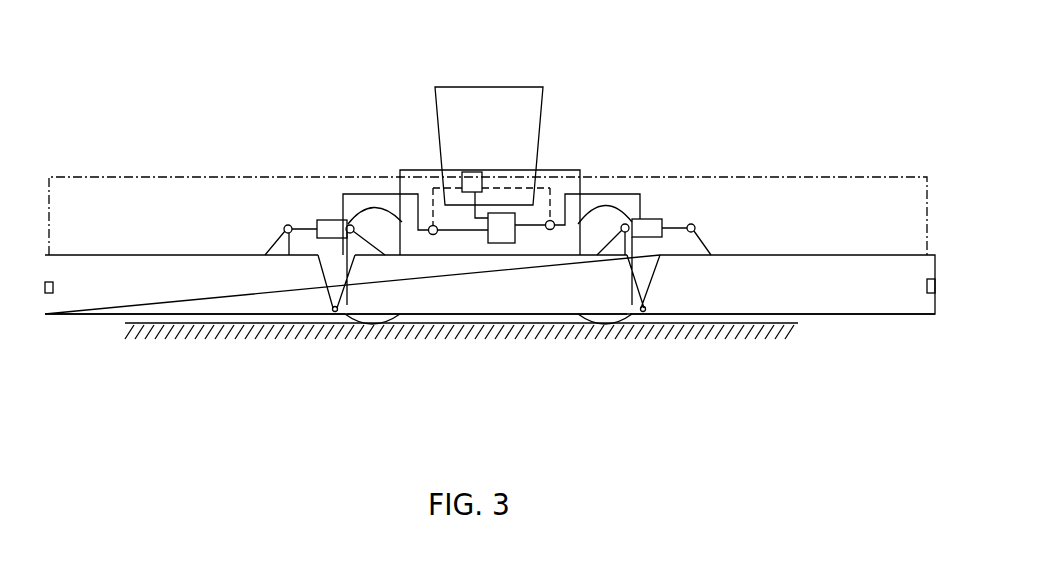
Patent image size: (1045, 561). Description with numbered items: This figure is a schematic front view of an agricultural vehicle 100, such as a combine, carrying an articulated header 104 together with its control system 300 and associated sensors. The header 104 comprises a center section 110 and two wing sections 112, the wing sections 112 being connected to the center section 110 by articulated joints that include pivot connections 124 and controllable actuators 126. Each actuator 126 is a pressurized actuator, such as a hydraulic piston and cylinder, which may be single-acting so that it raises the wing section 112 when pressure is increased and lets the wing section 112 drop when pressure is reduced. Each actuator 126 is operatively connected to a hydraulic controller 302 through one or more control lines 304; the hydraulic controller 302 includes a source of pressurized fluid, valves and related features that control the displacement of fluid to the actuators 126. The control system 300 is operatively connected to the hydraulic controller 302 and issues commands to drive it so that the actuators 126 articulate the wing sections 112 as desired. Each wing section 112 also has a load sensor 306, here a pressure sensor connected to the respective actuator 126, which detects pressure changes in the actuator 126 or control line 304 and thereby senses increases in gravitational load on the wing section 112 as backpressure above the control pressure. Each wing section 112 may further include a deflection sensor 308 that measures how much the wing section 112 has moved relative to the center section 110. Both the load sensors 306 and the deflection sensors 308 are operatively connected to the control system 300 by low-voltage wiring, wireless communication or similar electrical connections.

The agricultural vehicle 100 is at (660, 70).
The header 104 is at (65, 308).
The center section 110 is at (485, 302).
The wing section 112 is at (193, 302).
The pivot connection 124 is at (337, 311).
The actuator 126 is at (318, 221).
The control system 300 is at (475, 172).
The hydraulic controller 302 is at (505, 243).
The control line 304 is at (380, 193).
The load sensor 306 is at (433, 235).
The deflection sensor 308 is at (53, 288).